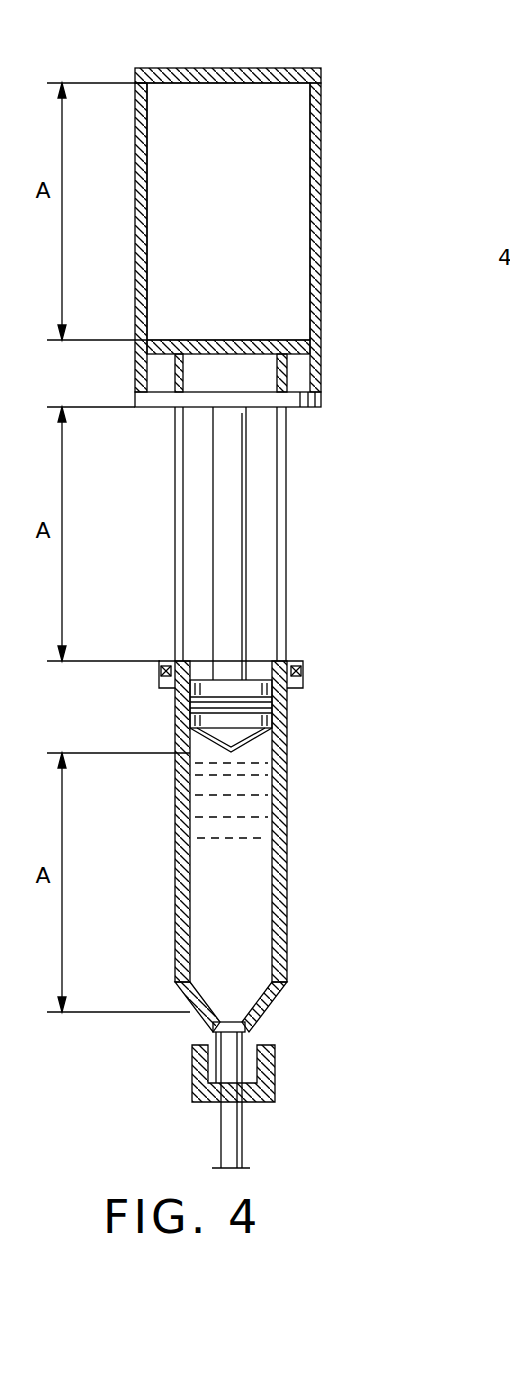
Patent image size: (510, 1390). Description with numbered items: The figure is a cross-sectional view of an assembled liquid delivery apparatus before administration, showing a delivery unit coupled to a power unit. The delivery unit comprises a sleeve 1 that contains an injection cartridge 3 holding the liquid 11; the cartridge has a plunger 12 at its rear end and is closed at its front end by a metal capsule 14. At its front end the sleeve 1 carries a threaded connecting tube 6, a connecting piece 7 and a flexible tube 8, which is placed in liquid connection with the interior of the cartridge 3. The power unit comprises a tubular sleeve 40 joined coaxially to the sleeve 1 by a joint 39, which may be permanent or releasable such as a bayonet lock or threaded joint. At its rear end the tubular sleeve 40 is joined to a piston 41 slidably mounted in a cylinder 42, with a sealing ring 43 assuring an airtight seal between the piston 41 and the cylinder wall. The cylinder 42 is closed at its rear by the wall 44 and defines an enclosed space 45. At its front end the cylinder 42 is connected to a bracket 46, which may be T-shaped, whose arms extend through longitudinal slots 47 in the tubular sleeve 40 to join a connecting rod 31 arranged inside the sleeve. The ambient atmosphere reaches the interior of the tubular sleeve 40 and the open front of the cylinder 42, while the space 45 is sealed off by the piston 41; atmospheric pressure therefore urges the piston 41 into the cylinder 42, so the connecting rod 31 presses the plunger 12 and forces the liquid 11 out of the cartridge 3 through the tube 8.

The sleeve 1 is at (175, 905).
The injection cartridge 3 is at (272, 725).
The threaded connecting tube 6 is at (213, 1040).
The connecting piece 7 is at (198, 1093).
The flexible tube 8 is at (226, 1140).
The liquid 11 is at (241, 885).
The plunger 12 is at (192, 722).
The metal capsule 14 is at (245, 1028).
The connecting rod 31 is at (215, 592).
The joint 39 is at (303, 665).
The tubular sleeve 40 is at (287, 451).
The piston 41 is at (205, 346).
The cylinder 42 is at (321, 190).
The sealing ring 43 is at (303, 343).
The wall 44 is at (290, 68).
The enclosed space 45 is at (214, 202).
The bracket 46 is at (166, 398).
The longitudinal slots 47 is at (178, 522).